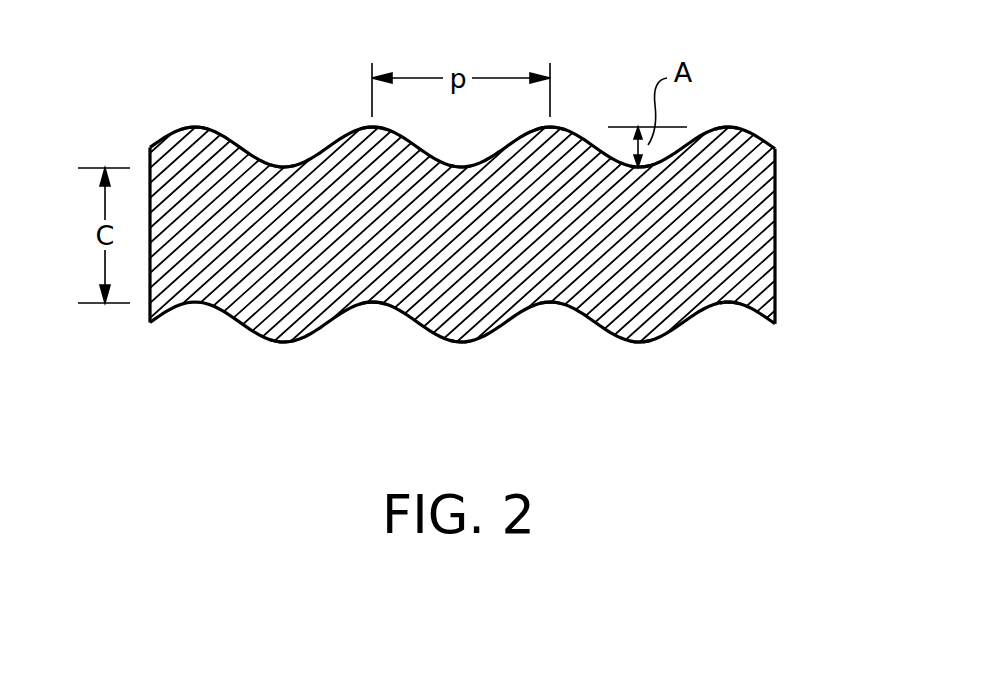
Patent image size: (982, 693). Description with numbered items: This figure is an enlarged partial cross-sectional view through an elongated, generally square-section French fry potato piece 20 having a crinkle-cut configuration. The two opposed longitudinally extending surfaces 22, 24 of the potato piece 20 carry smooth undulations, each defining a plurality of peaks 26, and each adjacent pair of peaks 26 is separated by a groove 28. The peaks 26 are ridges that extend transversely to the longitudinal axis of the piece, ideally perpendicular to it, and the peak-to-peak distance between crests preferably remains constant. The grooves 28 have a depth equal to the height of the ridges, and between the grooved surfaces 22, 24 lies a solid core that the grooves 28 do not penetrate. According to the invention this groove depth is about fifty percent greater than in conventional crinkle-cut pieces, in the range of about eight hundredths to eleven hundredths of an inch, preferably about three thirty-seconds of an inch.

The potato piece 20 is at (775, 177).
The longitudinally extending surface 22 is at (165, 133).
The longitudinally extending surface 24 is at (227, 318).
The peaks 26 is at (195, 125).
The groove 28 is at (283, 165).